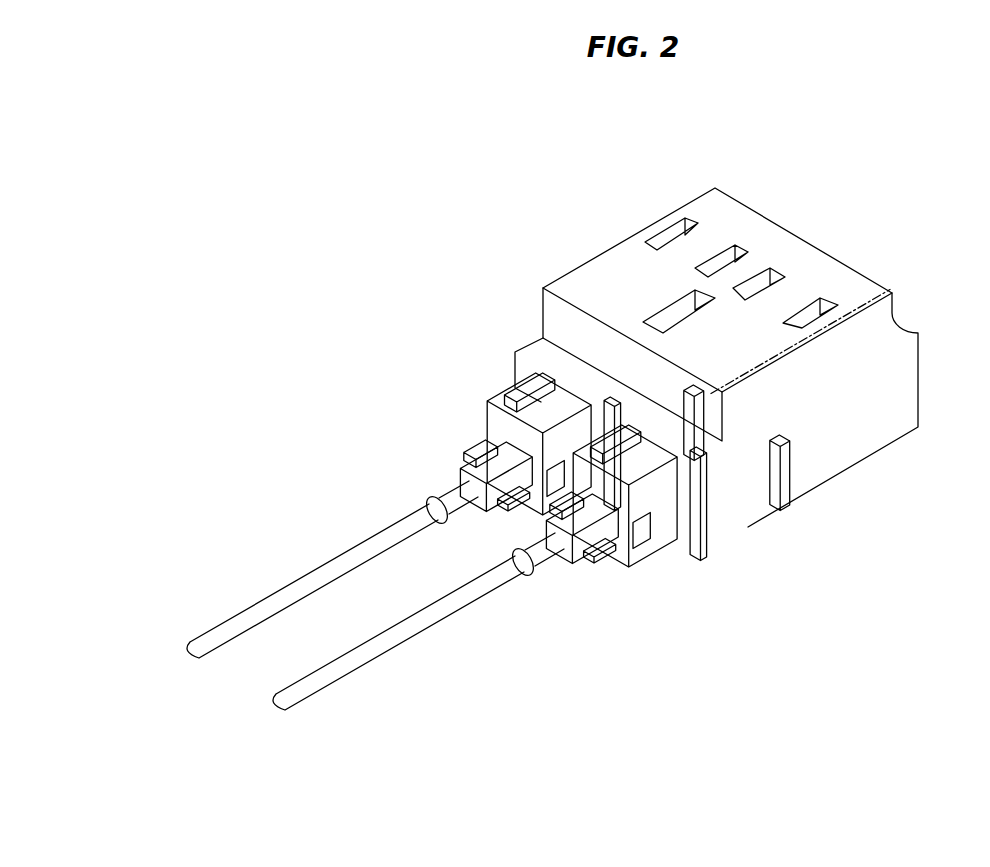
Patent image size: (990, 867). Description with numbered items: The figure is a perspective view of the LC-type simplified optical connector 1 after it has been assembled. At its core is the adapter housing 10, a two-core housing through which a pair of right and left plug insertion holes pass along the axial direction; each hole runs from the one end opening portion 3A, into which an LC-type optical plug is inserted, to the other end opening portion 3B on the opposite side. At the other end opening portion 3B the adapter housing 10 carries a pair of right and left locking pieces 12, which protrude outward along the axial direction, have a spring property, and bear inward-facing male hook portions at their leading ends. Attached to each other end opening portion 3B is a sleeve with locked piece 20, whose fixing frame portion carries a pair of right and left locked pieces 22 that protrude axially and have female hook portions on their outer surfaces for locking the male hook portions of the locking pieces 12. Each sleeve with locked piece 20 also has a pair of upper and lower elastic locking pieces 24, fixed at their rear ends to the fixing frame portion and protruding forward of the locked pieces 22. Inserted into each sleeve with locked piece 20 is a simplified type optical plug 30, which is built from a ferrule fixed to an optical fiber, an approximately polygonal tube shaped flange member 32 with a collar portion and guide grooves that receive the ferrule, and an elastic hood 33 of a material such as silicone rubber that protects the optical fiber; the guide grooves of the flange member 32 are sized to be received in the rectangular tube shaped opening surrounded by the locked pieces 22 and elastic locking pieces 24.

The LC-type simplified optical connector 1 is at (507, 263).
The adapter housing 10 is at (632, 262).
The locking piece 12 is at (558, 437).
The one end opening portion 3A is at (918, 388).
The other end opening portion 3B is at (540, 437).
The sleeve with locked piece 20 is at (476, 402).
The locked piece 22 is at (490, 393).
The elastic locking piece 24 is at (478, 426).
The simplified type optical plug 30 is at (392, 505).
The flange member 32 is at (477, 470).
The hood 33 is at (447, 490).